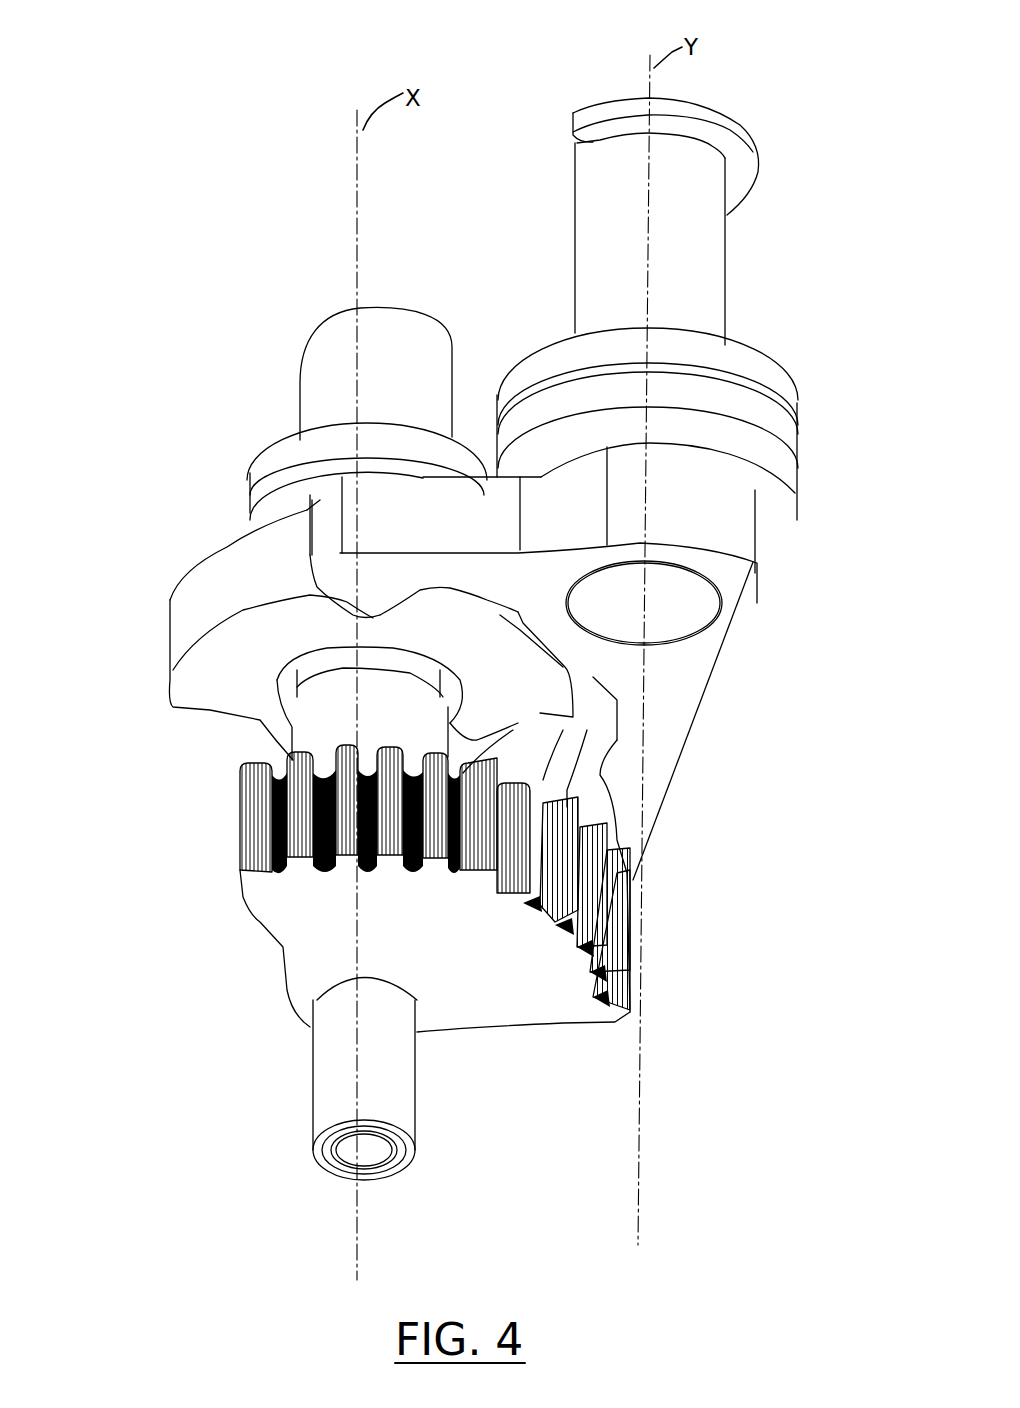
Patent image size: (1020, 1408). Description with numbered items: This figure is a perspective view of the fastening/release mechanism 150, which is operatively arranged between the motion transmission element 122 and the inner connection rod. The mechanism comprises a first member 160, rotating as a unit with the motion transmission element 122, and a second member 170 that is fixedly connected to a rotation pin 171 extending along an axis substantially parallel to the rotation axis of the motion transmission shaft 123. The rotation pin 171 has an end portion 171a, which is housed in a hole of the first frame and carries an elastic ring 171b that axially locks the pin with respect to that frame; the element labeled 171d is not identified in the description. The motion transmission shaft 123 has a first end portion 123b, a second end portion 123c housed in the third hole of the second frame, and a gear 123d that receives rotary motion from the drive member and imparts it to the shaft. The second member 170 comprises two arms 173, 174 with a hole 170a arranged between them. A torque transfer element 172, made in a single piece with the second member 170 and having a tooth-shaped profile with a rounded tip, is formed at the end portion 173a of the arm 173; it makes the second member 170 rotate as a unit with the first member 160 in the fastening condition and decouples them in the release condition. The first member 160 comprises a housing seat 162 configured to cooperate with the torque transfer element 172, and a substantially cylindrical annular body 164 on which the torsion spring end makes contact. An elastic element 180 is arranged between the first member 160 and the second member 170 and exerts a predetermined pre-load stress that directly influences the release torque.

The fastening/release mechanism 150 is at (166, 68).
The motion transmission element 122 is at (296, 1050).
The motion transmission shaft 123 is at (292, 729).
The first end portion of the motion transmission shaft 123b is at (350, 327).
The second end portion of the motion transmission shaft 123c is at (390, 1080).
The gear 123d is at (613, 997).
The first member 160 is at (204, 540).
The housing seat 162 is at (355, 616).
The substantially cylindrical annular body 164 is at (310, 450).
The second member 170 is at (710, 706).
The hole 170a is at (682, 640).
The rotation pin 171 is at (590, 258).
The end portion of the rotation pin 171a is at (593, 170).
The elastic ring 171b is at (737, 140).
The pin end 171d is at (683, 606).
The torque transfer element 172 is at (345, 592).
The arm 173 is at (440, 502).
The end portion of the arm 173a is at (320, 522).
The arm 174 is at (670, 758).
The elastic element 180 is at (796, 430).